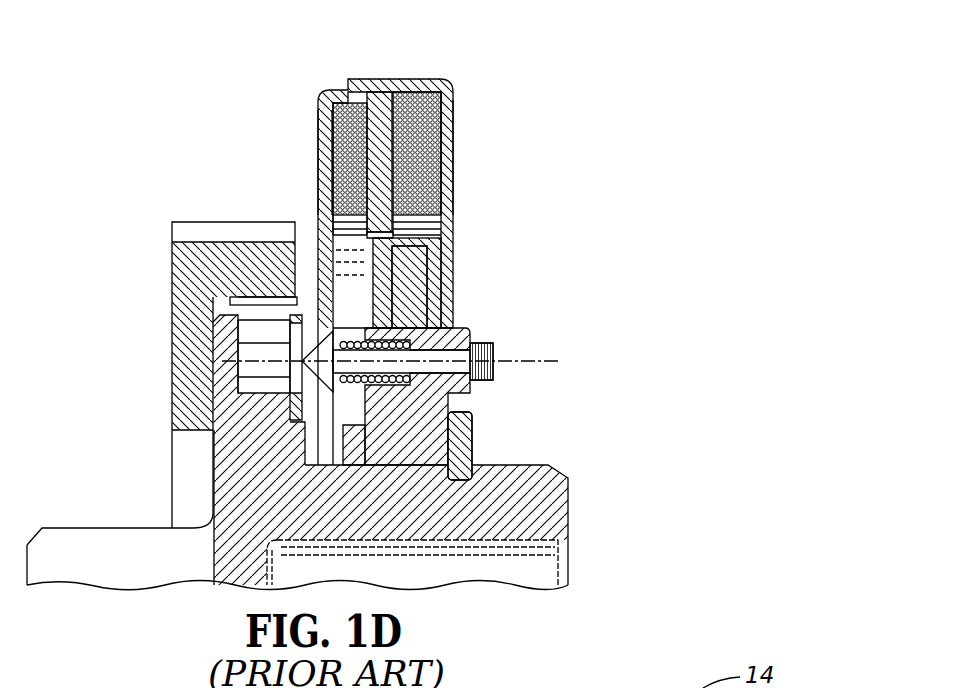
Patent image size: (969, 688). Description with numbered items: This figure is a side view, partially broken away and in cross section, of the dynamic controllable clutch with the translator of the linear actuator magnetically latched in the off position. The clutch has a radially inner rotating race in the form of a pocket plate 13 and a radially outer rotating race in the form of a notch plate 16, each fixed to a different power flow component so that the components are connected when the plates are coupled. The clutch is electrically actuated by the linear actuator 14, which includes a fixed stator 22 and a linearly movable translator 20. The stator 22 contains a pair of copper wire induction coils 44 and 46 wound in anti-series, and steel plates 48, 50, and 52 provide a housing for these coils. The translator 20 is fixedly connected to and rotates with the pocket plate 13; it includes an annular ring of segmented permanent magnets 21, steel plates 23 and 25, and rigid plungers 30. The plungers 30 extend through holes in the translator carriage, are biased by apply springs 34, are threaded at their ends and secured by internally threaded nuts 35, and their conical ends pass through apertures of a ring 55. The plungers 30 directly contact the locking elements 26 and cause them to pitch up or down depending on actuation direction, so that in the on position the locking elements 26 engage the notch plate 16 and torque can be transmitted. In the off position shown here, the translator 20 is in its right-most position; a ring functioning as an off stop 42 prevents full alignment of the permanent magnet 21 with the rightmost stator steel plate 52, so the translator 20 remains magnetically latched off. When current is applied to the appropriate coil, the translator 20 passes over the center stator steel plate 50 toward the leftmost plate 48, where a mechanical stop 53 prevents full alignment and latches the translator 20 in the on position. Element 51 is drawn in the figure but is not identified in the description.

The pocket plate 13 is at (562, 461).
The linear actuator 14 is at (410, 58).
The notch plate 16 is at (171, 276).
The translator 20 is at (455, 287).
The permanent magnets 21 is at (432, 268).
The stator 22 is at (452, 78).
The steel plate 23 is at (380, 228).
The steel plate 25 is at (445, 278).
The locking elements 26 is at (247, 311).
The plungers 30 is at (456, 342).
The apply springs 34 is at (405, 397).
The nuts 35 is at (494, 352).
The off stop 42 is at (474, 442).
The stator coil 44 is at (343, 122).
The stator coil 46 is at (418, 170).
The stator steel plate 48 is at (320, 138).
The stator steel plate 50 is at (380, 105).
The support step 51 is at (346, 441).
The stator steel plate 52 is at (453, 127).
The mechanical stop 53 is at (303, 443).
The ring 55 is at (298, 316).